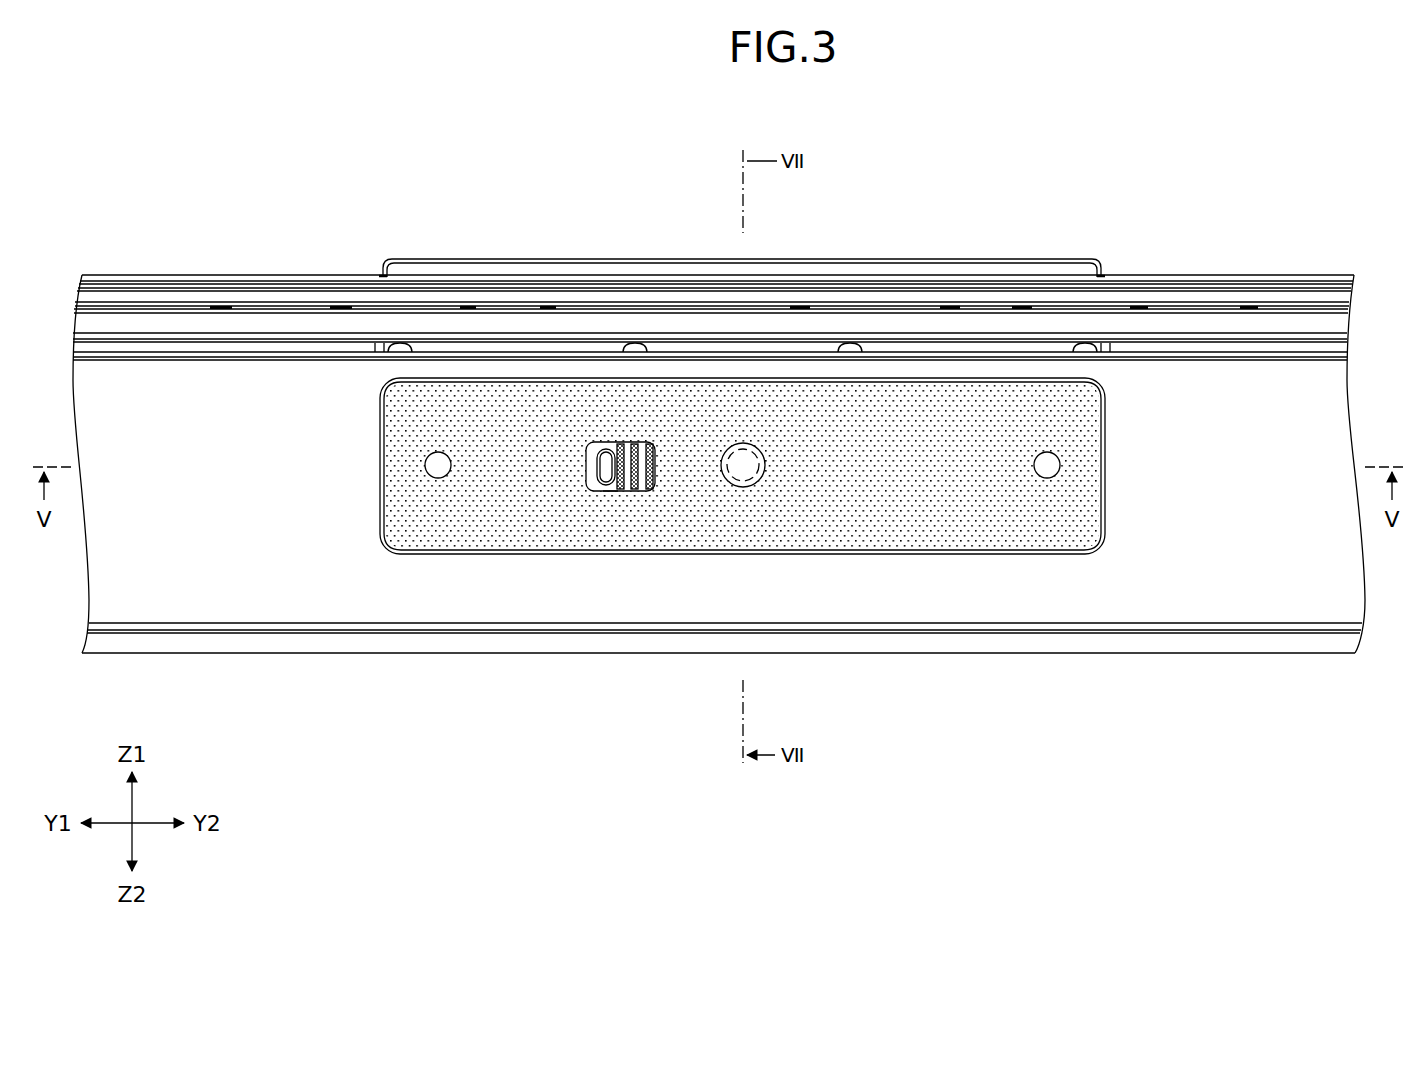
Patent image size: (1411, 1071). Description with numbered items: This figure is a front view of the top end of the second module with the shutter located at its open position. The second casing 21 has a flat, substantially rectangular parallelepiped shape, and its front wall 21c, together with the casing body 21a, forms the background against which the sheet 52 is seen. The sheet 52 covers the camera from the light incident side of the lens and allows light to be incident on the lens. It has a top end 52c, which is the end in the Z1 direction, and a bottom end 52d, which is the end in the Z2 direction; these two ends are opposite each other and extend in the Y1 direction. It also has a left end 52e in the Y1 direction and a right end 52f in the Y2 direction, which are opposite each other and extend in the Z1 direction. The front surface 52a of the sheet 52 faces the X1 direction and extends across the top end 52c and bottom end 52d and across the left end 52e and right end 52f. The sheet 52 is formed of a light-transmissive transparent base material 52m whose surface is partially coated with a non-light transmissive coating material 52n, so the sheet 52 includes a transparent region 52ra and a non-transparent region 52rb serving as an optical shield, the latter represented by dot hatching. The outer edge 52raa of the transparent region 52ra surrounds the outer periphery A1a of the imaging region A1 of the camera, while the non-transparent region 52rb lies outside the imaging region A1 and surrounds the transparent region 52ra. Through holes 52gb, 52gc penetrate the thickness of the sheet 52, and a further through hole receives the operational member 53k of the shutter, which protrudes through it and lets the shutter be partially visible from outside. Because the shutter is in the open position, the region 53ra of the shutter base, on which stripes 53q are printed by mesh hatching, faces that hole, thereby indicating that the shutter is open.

The second casing 21 is at (719, 426).
The door trim body 21a is at (719, 426).
The front wall 21c is at (1248, 387).
The sheet 52 is at (741, 444).
The front surface 52a is at (741, 444).
The top end 52c is at (535, 383).
The bottom end 52d is at (510, 554).
The left end 52e is at (380, 467).
The right end 52f is at (1106, 467).
The through hole 52gc is at (438, 478).
The through hole 52gb is at (1047, 478).
The transparent base material 52m is at (758, 460).
The transparent region 52ra is at (758, 460).
The outer edge 52raa is at (748, 340).
The coating material 52n is at (742, 552).
The non-transparent region 52rb is at (972, 520).
The operational member 53k is at (621, 480).
The stripes 53q is at (635, 602).
The region 53ra is at (637, 491).
The imaging region A1 is at (787, 340).
The outer periphery A1a is at (746, 446).